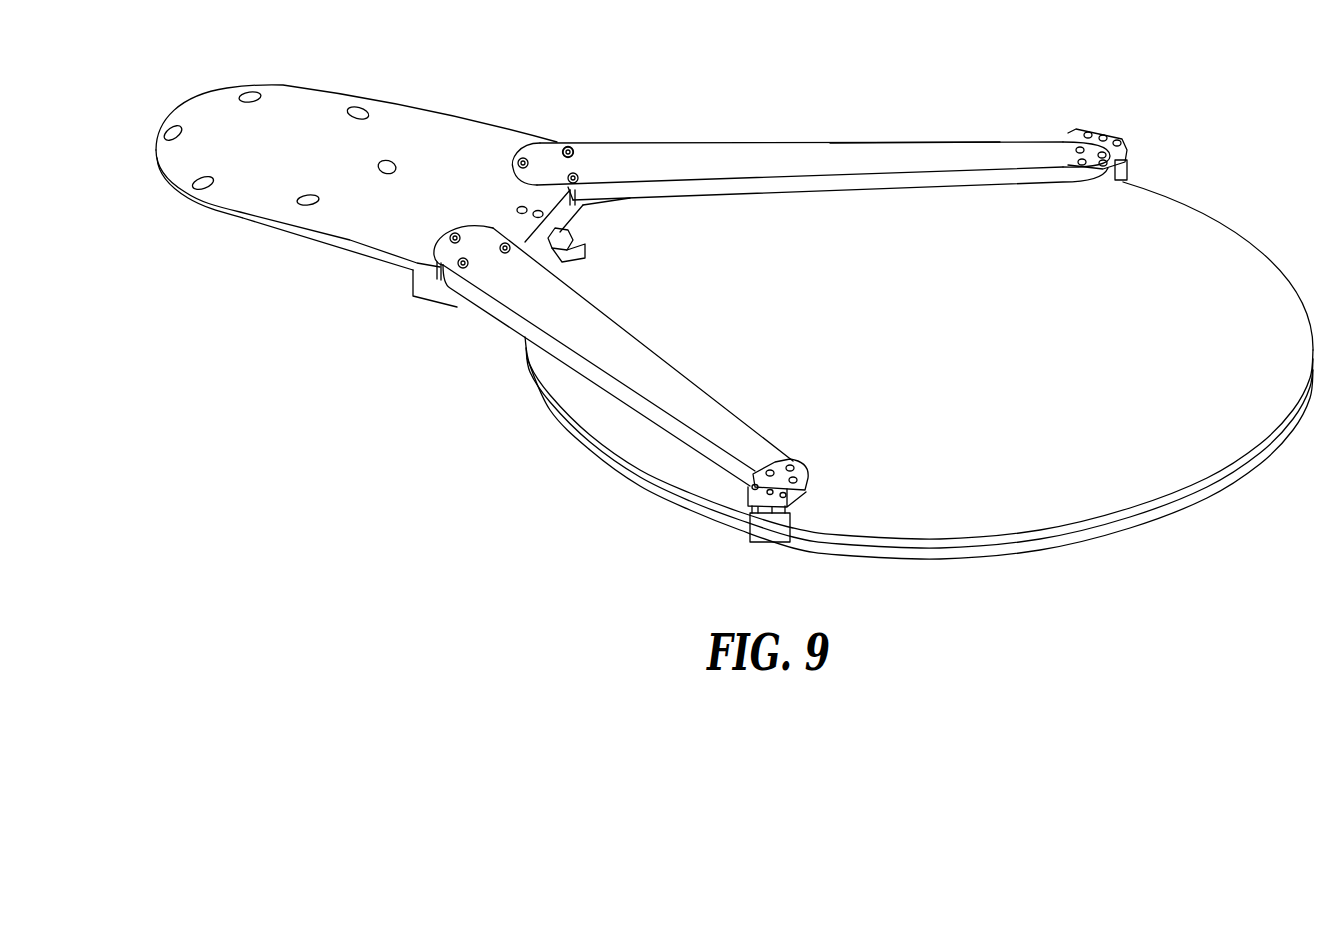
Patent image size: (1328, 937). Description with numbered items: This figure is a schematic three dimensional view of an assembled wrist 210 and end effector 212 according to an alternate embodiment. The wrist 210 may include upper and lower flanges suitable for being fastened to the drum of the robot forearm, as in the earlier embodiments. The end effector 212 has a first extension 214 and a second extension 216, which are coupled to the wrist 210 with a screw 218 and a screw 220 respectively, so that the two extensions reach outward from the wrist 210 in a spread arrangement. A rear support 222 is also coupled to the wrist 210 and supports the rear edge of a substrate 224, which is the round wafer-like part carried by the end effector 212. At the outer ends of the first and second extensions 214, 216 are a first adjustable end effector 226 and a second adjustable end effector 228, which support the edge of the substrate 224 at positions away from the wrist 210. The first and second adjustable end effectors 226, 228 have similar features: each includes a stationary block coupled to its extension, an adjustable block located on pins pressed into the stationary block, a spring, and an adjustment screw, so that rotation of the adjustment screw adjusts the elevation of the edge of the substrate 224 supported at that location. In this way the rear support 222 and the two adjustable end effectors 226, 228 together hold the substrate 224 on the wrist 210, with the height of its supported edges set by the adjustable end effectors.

The wrist 210 is at (423, 110).
The end effector 212 is at (948, 142).
The first extension 214 is at (782, 142).
The second extension 216 is at (702, 383).
The screw 218 is at (568, 146).
The screw 220 is at (440, 267).
The rear support 222 is at (577, 243).
The substrate 224 is at (1157, 398).
The first adjustable end effector 226 is at (1107, 138).
The second adjustable end effector 228 is at (807, 467).